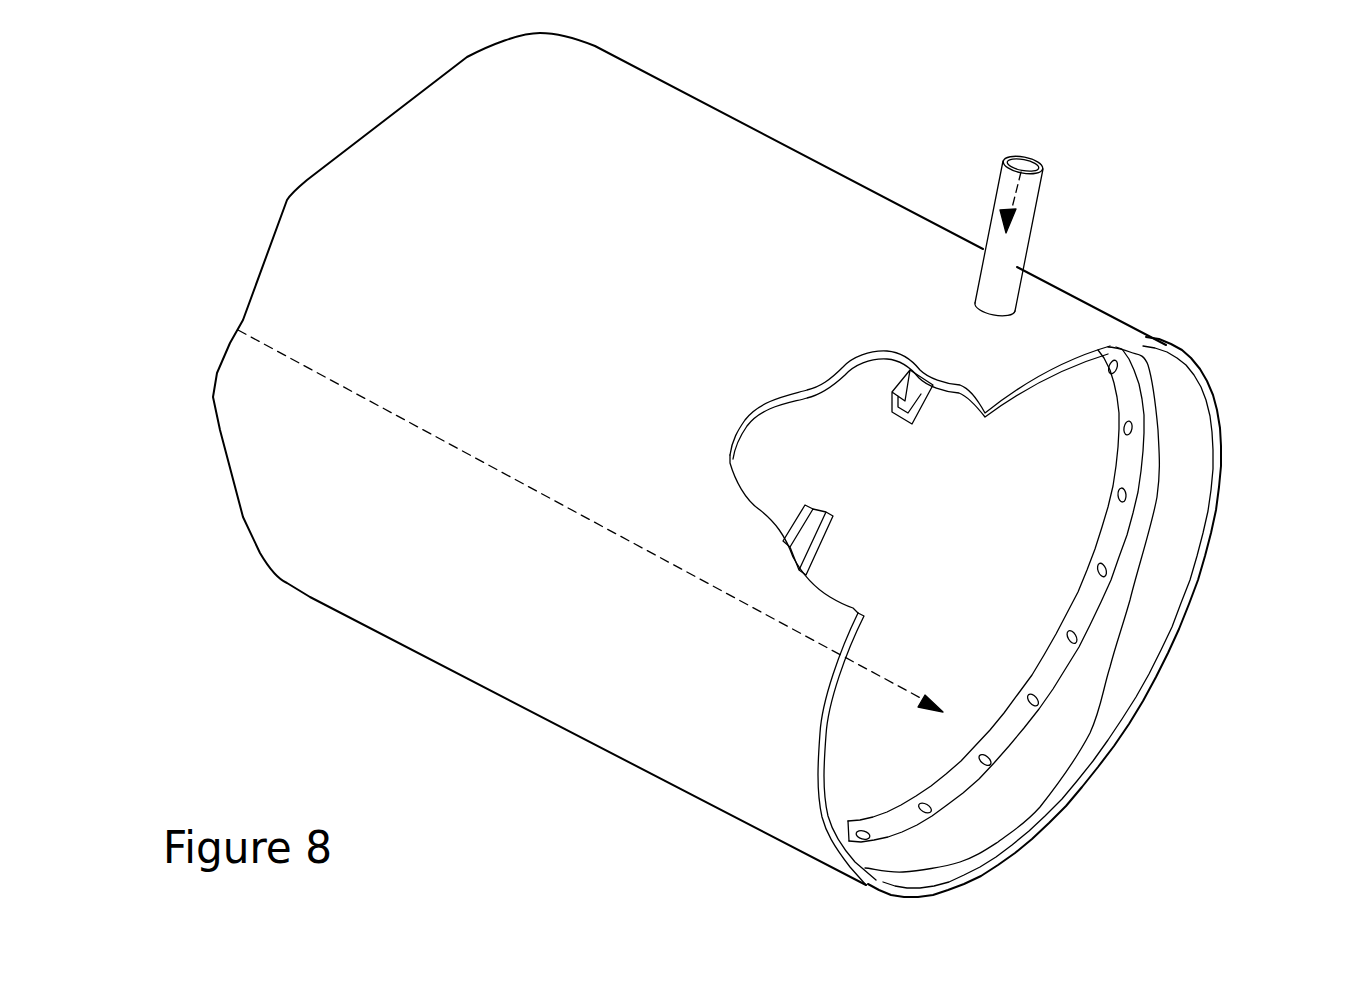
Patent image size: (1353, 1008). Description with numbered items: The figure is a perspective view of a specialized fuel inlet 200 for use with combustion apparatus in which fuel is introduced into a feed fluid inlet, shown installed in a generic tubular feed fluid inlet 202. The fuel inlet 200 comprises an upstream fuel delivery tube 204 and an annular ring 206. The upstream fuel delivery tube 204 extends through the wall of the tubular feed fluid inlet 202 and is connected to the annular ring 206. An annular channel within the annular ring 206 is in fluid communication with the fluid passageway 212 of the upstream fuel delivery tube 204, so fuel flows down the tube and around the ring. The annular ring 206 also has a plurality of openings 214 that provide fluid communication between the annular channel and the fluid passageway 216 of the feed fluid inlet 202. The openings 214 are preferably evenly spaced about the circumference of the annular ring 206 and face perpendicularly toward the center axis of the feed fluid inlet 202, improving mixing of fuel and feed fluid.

The fuel inlet 200 is at (1118, 515).
The tubular feed fluid inlet 202 is at (625, 700).
The upstream fuel delivery tube 204 is at (1012, 253).
The annular ring 206 is at (1132, 452).
The fluid passageway 212 is at (1024, 162).
The openings 214 is at (1076, 641).
The fluid passageway 216 is at (240, 330).